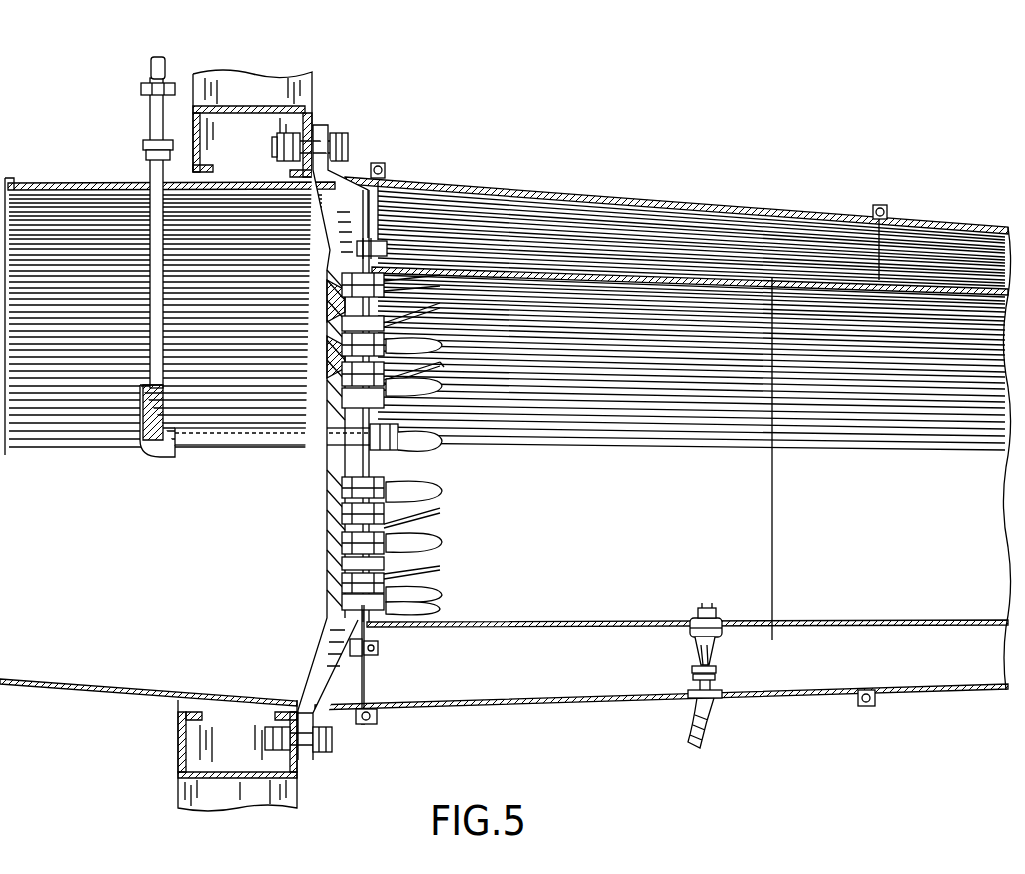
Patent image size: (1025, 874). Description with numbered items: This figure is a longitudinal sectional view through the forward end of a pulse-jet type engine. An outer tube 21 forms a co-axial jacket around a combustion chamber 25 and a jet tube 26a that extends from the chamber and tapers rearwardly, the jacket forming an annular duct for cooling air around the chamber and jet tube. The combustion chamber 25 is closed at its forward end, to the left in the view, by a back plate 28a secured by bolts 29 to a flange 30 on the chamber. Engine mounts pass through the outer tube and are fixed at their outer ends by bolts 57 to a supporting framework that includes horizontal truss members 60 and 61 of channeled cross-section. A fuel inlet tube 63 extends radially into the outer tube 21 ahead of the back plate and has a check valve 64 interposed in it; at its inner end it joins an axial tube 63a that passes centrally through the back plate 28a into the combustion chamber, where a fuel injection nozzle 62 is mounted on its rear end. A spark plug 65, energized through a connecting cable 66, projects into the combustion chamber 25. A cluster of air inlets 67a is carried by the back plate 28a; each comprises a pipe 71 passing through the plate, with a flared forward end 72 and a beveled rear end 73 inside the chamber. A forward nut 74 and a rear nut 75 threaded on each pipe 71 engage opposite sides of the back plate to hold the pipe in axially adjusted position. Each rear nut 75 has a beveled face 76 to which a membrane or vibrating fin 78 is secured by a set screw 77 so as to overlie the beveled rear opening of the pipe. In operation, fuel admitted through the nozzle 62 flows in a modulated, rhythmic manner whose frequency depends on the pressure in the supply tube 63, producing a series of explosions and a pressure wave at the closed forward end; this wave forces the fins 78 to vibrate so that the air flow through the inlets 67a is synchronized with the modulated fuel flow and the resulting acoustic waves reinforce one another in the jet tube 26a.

The outer tube 21 is at (476, 185).
The combustion chamber 25 is at (608, 627).
The jet tube 26a is at (926, 626).
The back plate 28a is at (385, 572).
The bolts 29 is at (348, 646).
The flange 30 is at (368, 660).
The bolts 57 is at (279, 148).
The horizontal truss member 60 is at (264, 107).
The horizontal truss member 61 is at (226, 769).
The fuel injection nozzle 62 is at (403, 455).
The fuel inlet tube 63 is at (150, 165).
The axial tube 63a is at (272, 450).
The check valve 64 is at (151, 112).
The spark plug 65 is at (698, 615).
The connecting cable 66 is at (710, 712).
The air inlets 67a is at (440, 367).
The pipe 71 is at (391, 281).
The flared forward end 72 is at (328, 292).
The beveled rear end 73 is at (421, 536).
The forward nut 74 is at (330, 360).
The rear nut 75 is at (400, 323).
The beveled face 76 is at (405, 491).
The set screw 77 is at (405, 590).
The vibrating fin 78 is at (422, 407).